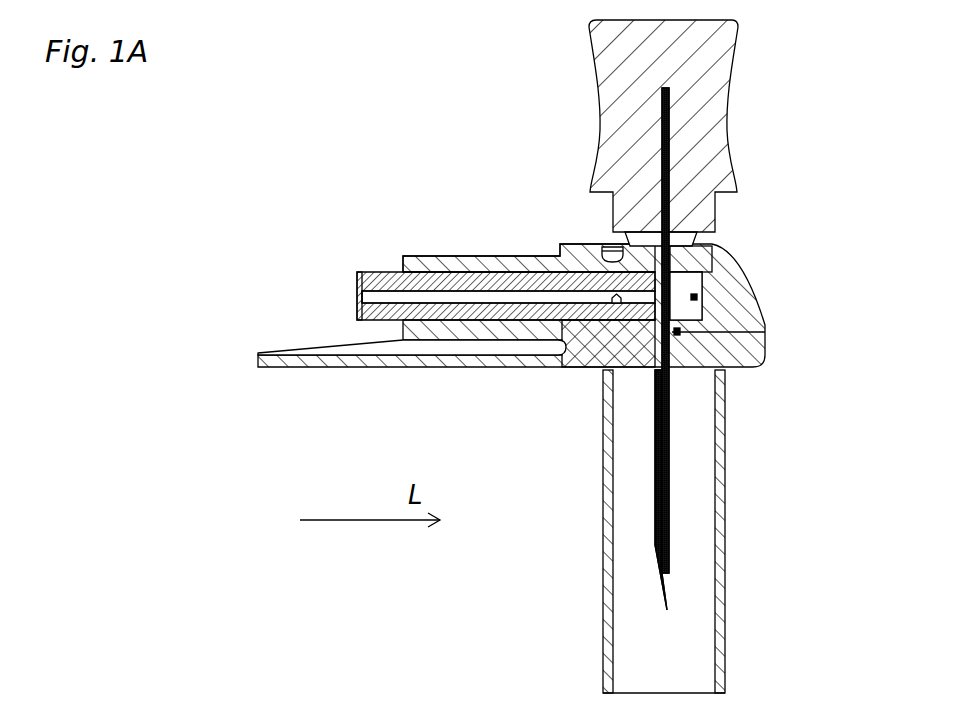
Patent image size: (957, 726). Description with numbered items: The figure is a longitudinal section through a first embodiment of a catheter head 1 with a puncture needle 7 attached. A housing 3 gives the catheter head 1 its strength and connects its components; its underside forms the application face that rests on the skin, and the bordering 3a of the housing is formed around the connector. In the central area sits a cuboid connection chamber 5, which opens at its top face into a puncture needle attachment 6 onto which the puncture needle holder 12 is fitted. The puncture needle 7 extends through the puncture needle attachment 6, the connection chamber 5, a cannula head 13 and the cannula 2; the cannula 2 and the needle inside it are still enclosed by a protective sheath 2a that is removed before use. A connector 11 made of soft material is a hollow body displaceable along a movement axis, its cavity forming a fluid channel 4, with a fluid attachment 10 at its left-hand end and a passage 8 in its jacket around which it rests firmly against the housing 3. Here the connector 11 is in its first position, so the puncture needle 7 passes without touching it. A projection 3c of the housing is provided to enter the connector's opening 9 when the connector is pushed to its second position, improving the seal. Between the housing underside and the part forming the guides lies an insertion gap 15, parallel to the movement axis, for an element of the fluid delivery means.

The catheter head 1 is at (818, 292).
The cannula 2 is at (675, 427).
The protective sheath 2a is at (723, 496).
The housing 3 is at (470, 360).
The bordering 3a is at (427, 262).
The projection 3c is at (698, 297).
The fluid channel 4 is at (450, 298).
The connection chamber 5 is at (676, 294).
The puncture needle attachment 6 is at (675, 258).
The puncture needle 7 is at (667, 180).
The passage 8 is at (616, 304).
The opening 9 is at (650, 301).
The fluid attachment 10 is at (373, 298).
The connector 11 is at (530, 283).
The puncture needle holder 12 is at (700, 74).
The cannula head 13 is at (680, 331).
The insertion gap 15 is at (405, 348).